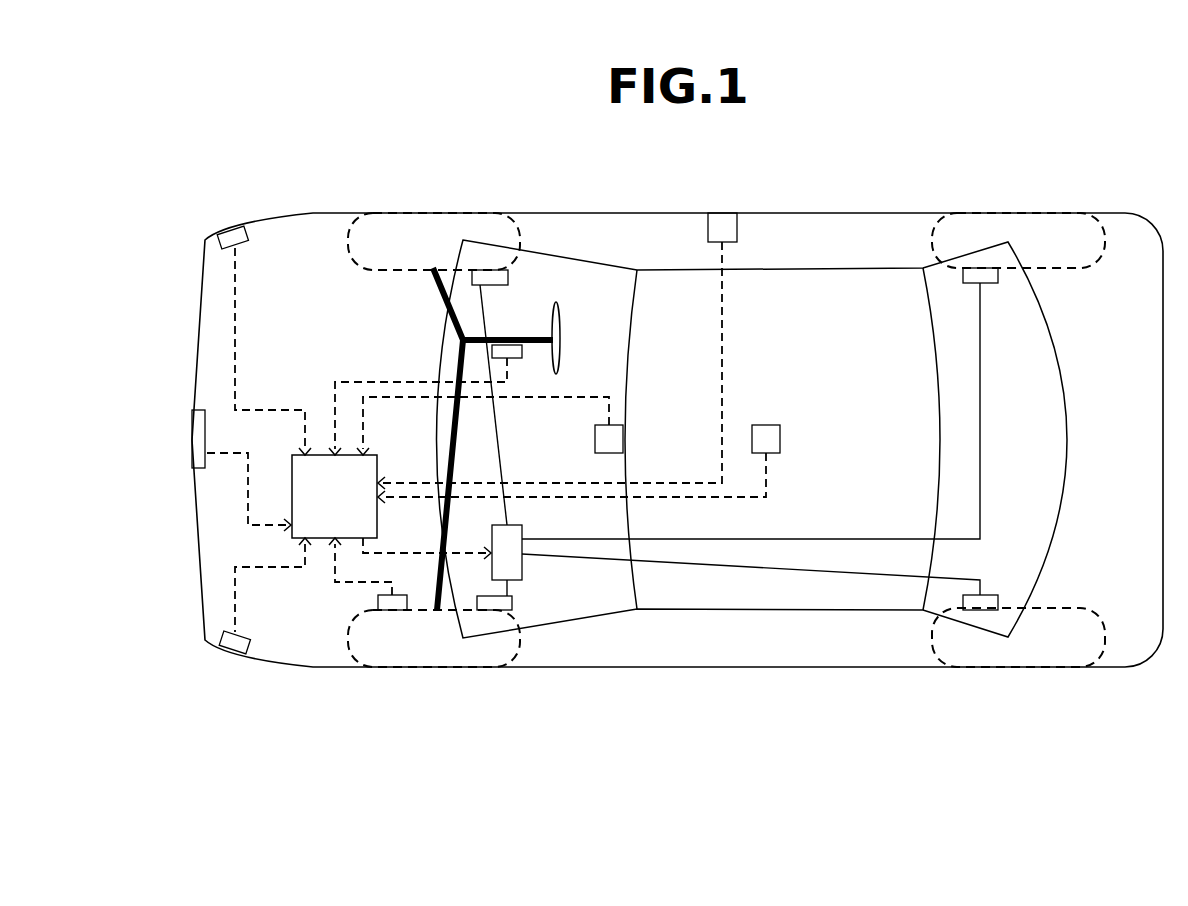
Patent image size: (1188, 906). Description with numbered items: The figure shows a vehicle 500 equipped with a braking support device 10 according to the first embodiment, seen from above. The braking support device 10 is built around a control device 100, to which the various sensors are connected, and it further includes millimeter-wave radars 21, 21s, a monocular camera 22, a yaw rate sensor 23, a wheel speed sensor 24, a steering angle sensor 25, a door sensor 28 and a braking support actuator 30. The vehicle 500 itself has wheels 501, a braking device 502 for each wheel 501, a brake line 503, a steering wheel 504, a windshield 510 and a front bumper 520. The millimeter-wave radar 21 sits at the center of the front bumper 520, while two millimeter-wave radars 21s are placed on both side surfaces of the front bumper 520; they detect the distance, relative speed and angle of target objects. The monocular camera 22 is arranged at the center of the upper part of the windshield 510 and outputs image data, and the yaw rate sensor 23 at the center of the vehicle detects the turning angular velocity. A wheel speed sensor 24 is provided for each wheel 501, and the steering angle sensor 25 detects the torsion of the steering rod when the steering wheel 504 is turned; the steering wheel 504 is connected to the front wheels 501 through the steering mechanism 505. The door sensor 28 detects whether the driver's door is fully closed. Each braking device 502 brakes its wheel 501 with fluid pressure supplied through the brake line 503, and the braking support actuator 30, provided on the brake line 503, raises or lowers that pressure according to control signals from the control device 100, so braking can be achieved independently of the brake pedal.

The braking support device 10 is at (186, 626).
The millimeter-wave radar 21 is at (197, 440).
The millimeter-wave radar 21s is at (228, 232).
The monocular camera 22 is at (490, 426).
The yaw rate sensor 23 is at (579, 464).
The wheel speed sensor 24 is at (382, 603).
The steering angle sensor 25 is at (520, 350).
The door sensor 28 is at (557, 351).
The braking support actuator 30 is at (442, 552).
The control device 100 is at (334, 496).
The vehicle 500 is at (754, 192).
The wheel 501 is at (435, 230).
The braking device 502 is at (512, 267).
The brake line 503 is at (505, 513).
The steering wheel 504 is at (558, 310).
The steering mechanism 505 is at (443, 341).
The windshield 510 is at (607, 368).
The front bumper 520 is at (197, 313).